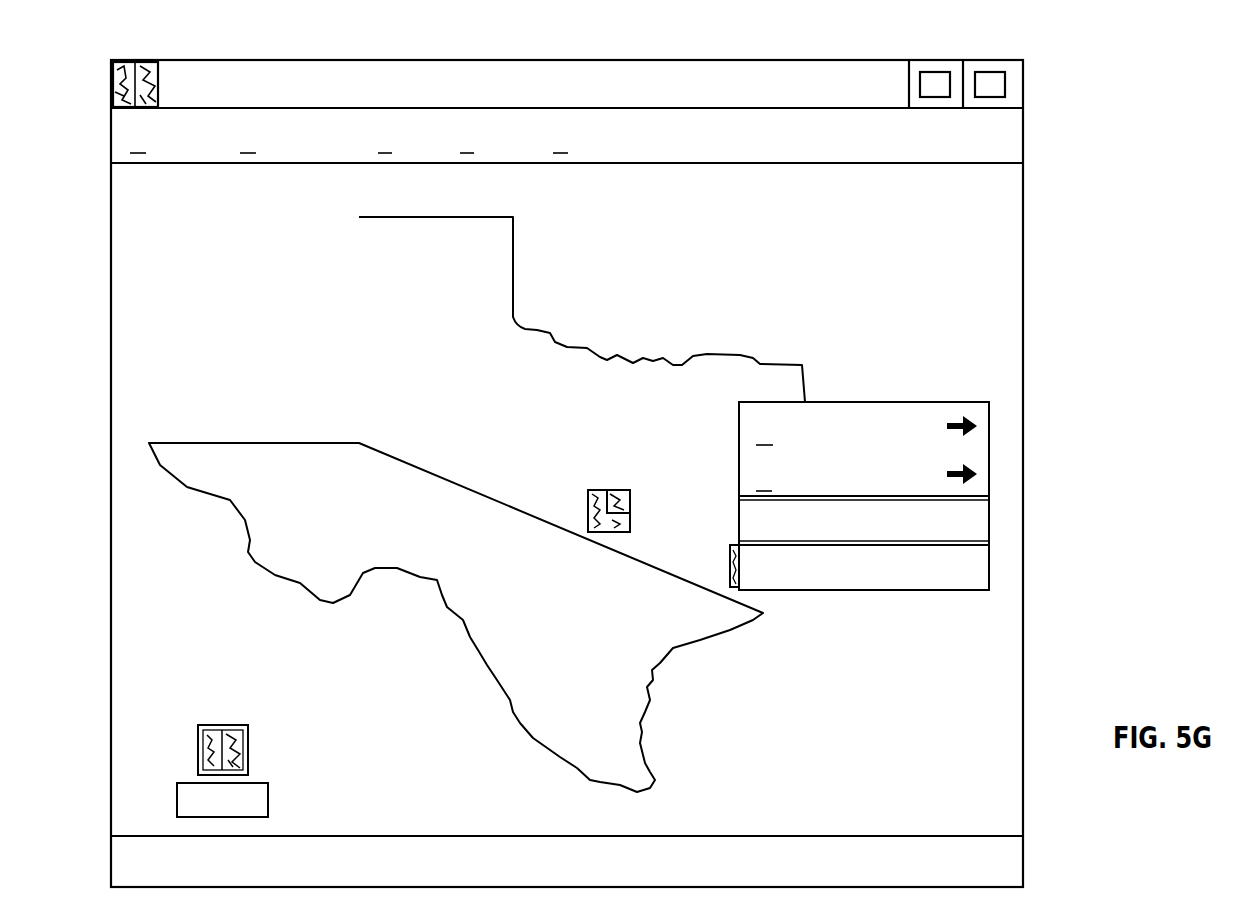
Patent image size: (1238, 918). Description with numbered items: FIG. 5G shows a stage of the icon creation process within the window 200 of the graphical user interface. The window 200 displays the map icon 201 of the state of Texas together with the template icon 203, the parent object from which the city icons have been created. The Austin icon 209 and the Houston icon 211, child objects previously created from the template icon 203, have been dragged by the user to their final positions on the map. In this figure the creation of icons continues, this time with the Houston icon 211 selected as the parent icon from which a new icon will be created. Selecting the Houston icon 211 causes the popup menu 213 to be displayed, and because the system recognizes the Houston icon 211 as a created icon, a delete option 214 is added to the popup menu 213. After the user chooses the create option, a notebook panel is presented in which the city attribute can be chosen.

The window 200 is at (856, 787).
The map icon 201 is at (664, 685).
The template icon 203 is at (198, 744).
The Austin icon 209 is at (630, 497).
The Houston icon 211 is at (781, 592).
The popup menu 213 is at (882, 402).
The delete option 214 is at (990, 568).